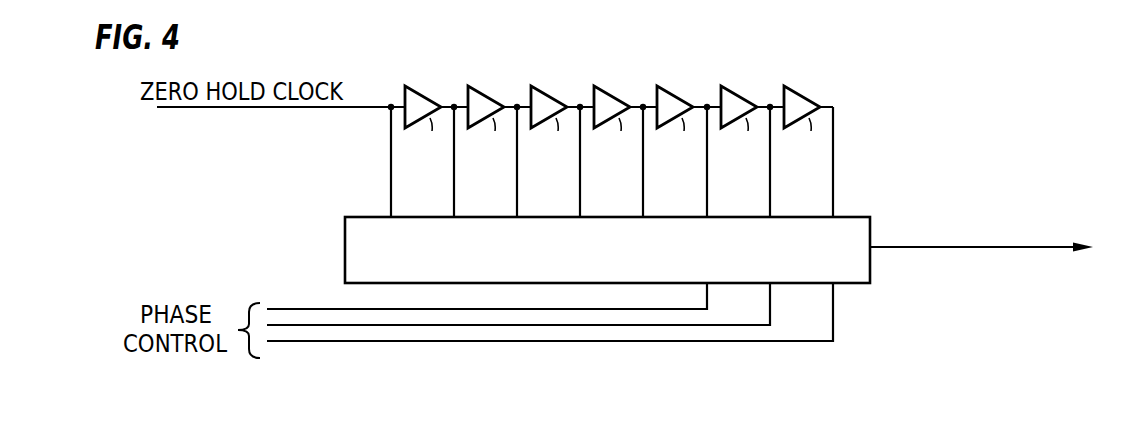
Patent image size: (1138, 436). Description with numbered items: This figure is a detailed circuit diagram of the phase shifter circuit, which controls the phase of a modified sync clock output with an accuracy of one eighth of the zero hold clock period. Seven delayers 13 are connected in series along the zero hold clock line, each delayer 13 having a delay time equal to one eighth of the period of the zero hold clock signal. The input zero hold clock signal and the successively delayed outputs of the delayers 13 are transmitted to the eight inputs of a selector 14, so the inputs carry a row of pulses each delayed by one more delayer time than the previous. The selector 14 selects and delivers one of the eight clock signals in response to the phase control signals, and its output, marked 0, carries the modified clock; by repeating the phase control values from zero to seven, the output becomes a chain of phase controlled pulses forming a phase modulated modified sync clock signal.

The delayer 13 is at (805, 73).
The selector 14 is at (352, 217).
The selector output 0 is at (973, 238).